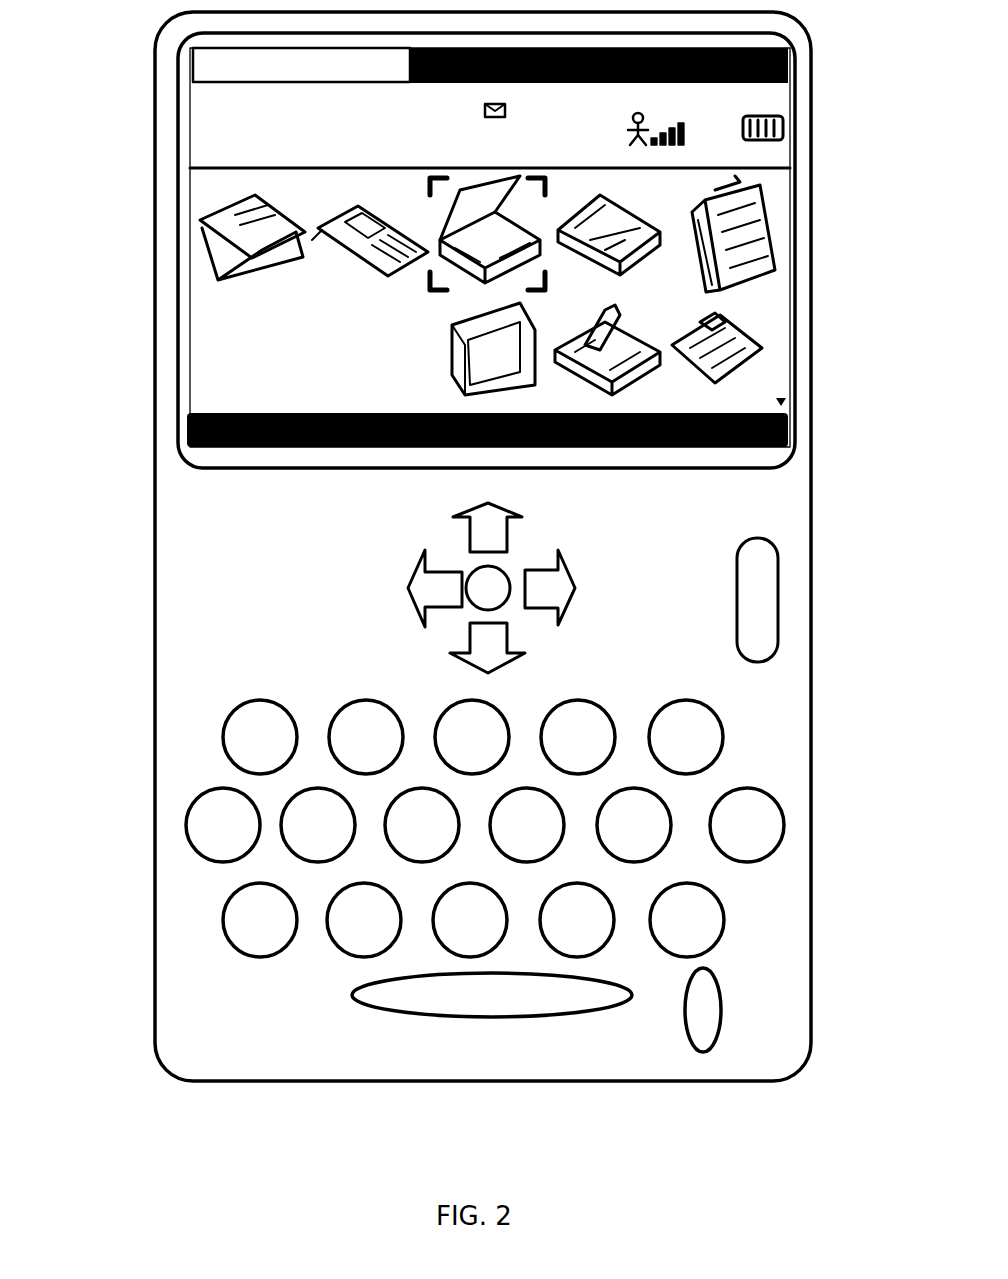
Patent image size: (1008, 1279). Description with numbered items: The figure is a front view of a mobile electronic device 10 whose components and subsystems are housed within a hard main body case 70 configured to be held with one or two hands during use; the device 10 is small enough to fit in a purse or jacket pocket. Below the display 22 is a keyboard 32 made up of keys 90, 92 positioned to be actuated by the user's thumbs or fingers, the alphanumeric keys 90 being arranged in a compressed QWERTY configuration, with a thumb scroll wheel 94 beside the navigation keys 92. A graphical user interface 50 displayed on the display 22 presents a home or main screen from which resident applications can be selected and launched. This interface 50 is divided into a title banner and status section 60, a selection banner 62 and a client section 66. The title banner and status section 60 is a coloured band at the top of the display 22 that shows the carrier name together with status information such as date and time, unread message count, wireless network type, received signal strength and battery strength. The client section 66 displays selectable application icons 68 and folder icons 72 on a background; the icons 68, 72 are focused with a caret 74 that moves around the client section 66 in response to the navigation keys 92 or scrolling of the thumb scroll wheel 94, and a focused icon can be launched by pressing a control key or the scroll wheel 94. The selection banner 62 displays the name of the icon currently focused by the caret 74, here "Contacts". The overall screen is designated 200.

The mobile electronic device 10 is at (812, 361).
The display 22 is at (796, 101).
The keyboard 32 is at (520, 852).
The graphical user interface 50 is at (775, 226).
The title banner and status section 60 is at (170, 45).
The selection banner 62 is at (187, 443).
The client section 66 is at (170, 172).
The application icons 68 is at (541, 267).
The main body case 70 is at (157, 520).
The folder icons 72 is at (462, 322).
The caret 74 is at (503, 210).
The alphanumeric keys 90 is at (725, 920).
The navigation keys 92 is at (578, 590).
The thumb scroll wheel 94 is at (778, 596).
The handheld device display screen 200 is at (127, 1154).